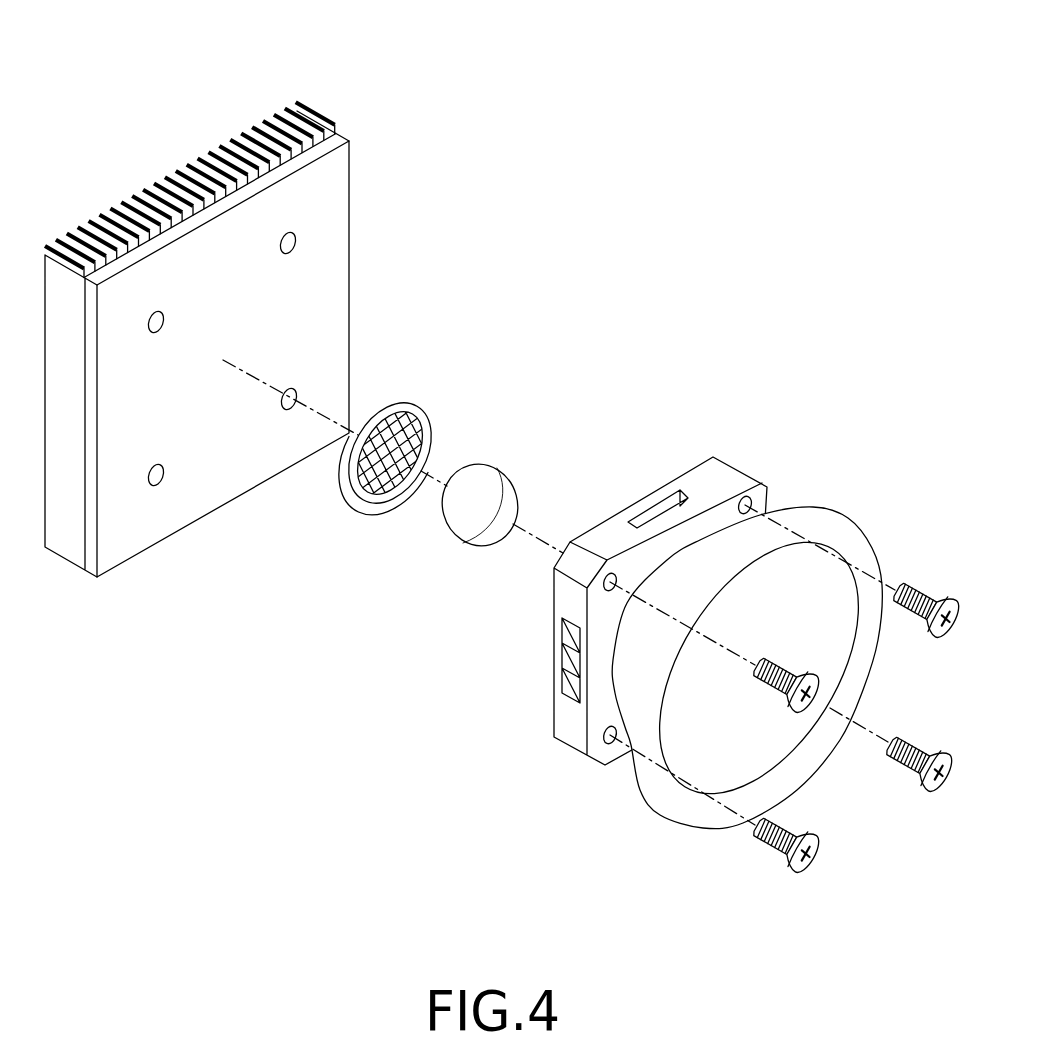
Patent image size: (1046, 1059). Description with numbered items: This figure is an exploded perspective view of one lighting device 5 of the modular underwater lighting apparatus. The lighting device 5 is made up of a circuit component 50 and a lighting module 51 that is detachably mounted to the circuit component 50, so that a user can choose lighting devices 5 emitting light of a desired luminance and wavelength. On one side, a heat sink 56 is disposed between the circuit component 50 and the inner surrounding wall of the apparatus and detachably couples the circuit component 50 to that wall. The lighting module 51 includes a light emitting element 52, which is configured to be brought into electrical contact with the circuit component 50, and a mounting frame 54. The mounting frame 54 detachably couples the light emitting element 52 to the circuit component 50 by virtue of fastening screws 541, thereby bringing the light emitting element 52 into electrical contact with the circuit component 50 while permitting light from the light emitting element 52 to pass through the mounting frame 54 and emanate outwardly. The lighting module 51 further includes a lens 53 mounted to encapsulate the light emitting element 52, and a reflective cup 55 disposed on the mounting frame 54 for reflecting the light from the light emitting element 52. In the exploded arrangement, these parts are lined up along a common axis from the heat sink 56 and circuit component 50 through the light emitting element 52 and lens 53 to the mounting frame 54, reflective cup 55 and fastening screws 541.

The lighting device 5 is at (630, 118).
The circuit component 50 is at (350, 246).
The heat sink 56 is at (318, 122).
The lighting module 51 is at (590, 372).
The light emitting element 52 is at (372, 498).
The lens 53 is at (483, 542).
The mounting frame 54 is at (563, 718).
The reflective cup 55 is at (665, 802).
The fastening screws 541 is at (903, 588).